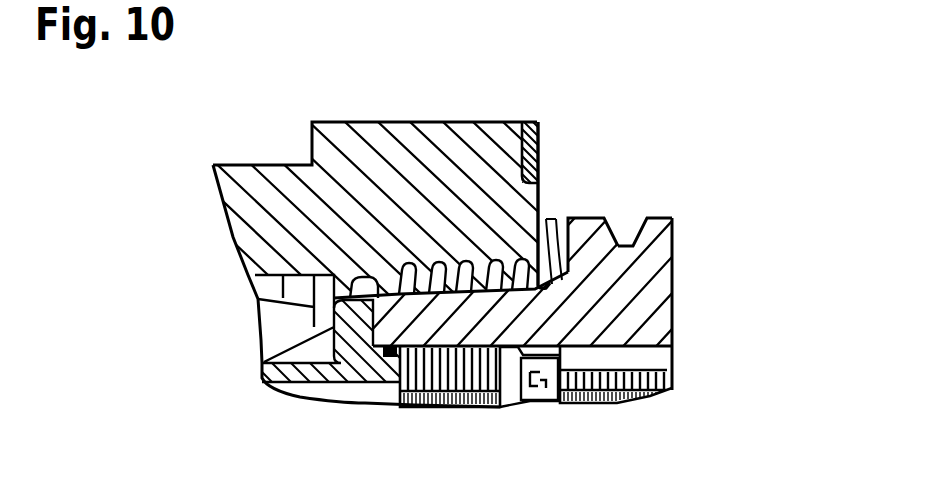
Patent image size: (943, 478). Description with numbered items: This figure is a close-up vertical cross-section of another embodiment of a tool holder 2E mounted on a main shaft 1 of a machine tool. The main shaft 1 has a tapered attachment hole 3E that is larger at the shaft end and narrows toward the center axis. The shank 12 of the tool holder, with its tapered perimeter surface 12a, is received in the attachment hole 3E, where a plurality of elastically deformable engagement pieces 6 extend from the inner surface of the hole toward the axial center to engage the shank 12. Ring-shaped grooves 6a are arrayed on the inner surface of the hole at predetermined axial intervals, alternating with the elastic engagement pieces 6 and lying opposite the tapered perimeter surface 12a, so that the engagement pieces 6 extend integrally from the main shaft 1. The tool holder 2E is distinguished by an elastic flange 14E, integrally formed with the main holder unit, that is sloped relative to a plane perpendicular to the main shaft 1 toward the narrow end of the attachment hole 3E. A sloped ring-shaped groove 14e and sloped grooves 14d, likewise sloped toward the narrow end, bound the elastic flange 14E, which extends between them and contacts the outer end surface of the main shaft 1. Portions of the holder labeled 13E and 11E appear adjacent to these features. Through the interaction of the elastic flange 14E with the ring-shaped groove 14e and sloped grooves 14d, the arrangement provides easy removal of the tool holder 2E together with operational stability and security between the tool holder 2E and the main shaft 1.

The main shaft 1 is at (244, 165).
The elastically deformable engagement pieces 6 is at (403, 280).
The ring-shaped grooves 6a is at (432, 278).
The attachment hole 3E is at (486, 272).
The elastic flange 14E is at (543, 222).
The sloped grooves 14d is at (560, 219).
The ring-shaped groove 14e is at (595, 219).
The insert member 13E is at (663, 218).
The nut body 11E is at (676, 275).
The tool holder 2E is at (722, 222).
The shank 12 is at (468, 322).
The tapered perimeter surface 12a is at (392, 362).